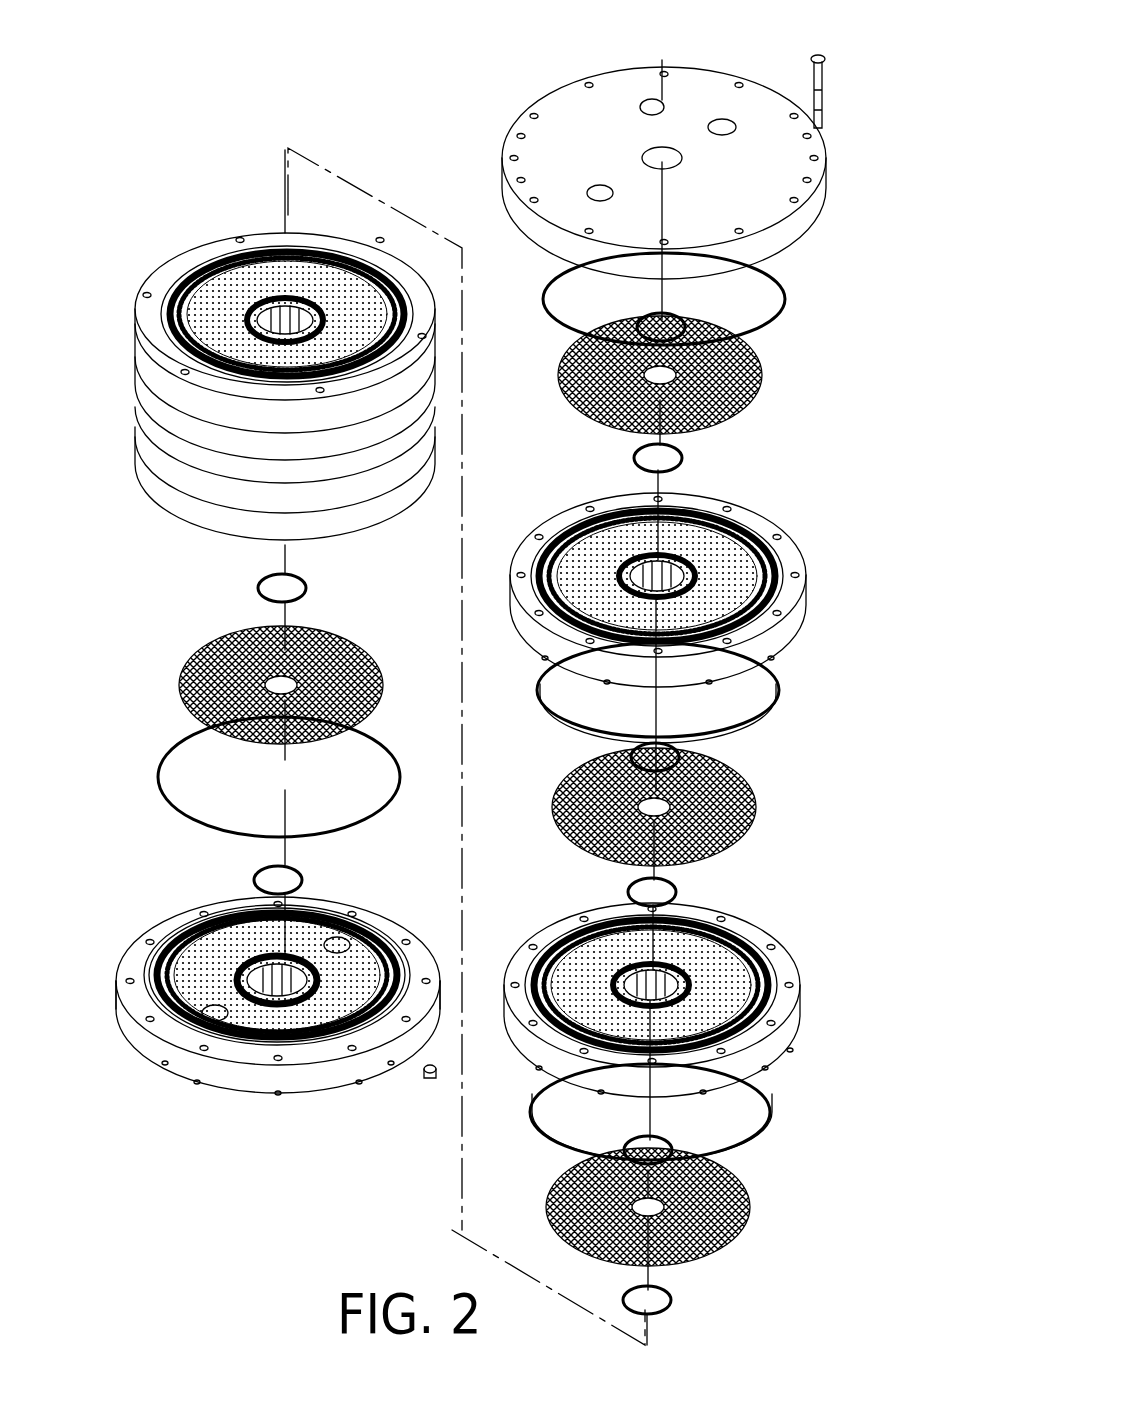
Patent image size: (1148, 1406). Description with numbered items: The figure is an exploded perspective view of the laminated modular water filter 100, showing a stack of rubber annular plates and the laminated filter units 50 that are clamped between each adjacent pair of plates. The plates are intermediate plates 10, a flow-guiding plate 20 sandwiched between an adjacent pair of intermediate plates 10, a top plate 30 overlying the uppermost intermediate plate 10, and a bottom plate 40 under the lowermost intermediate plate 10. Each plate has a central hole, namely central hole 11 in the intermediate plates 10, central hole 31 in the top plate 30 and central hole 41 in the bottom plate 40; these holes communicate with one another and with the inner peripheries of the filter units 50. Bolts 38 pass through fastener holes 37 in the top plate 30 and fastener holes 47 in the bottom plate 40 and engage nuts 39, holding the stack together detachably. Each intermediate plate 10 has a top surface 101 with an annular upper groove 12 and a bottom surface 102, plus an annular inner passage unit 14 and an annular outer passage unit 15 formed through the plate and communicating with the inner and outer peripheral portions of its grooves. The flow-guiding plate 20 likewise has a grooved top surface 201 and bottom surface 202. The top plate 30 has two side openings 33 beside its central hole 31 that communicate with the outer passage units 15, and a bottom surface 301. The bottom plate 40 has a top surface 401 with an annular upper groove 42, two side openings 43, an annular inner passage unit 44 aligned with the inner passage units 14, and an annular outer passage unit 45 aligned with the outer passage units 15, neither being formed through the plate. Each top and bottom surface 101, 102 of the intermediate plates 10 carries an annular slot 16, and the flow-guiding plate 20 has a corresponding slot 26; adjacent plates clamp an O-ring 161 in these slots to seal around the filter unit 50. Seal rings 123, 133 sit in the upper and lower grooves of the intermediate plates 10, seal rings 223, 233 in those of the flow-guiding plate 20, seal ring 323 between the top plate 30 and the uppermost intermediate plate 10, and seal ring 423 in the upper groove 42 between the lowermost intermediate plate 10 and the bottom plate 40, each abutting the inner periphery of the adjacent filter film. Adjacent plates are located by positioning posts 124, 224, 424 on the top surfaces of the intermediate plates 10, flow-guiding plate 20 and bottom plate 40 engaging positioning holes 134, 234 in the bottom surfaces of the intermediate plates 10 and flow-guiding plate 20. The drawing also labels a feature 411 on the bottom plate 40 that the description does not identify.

The laminated modular water filter 100 is at (358, 1202).
The intermediate plate 10 is at (160, 256).
The top surface 101 is at (787, 550).
The bottom surface 102 is at (780, 702).
The central hole 11 is at (660, 550).
The annular upper groove 12 is at (580, 562).
The annular inner passage unit 14 is at (595, 548).
The annular outer passage unit 15 is at (787, 518).
The annular slot 16 is at (545, 615).
The seal ring 123 is at (684, 458).
The positioning post 124 is at (796, 600).
The seal ring 133 is at (258, 588).
The positioning hole 134 is at (797, 635).
The O-ring 161 is at (158, 777).
The flow-guiding plate 20 is at (694, 1025).
The top surface 201 is at (780, 925).
The bottom surface 202 is at (780, 1080).
The seal ring 223 is at (683, 892).
The positioning post 224 is at (792, 980).
The seal ring 233 is at (630, 1145).
The positioning hole 234 is at (790, 1049).
The annular slot 26 is at (527, 997).
The top plate 30 is at (677, 179).
The bottom surface 301 is at (792, 232).
The central hole 31 is at (652, 155).
The seal ring 323 is at (637, 324).
The side opening 33 is at (723, 128).
The fastener hole 37 is at (818, 156).
The bolt 38 is at (824, 68).
The nut 39 is at (428, 1100).
The bottom plate 40 is at (251, 1016).
The top surface 401 is at (162, 920).
The central hole 41 is at (262, 958).
The toothed band 411 is at (375, 950).
The annular upper groove 42 is at (252, 1042).
The seal ring 423 is at (255, 877).
The positioning post 424 is at (313, 1060).
The side opening 43 is at (344, 937).
The annular inner passage unit 44 is at (302, 952).
The annular outer passage unit 45 is at (264, 1060).
The fastener hole 47 is at (165, 1066).
The filter unit 50 is at (180, 640).